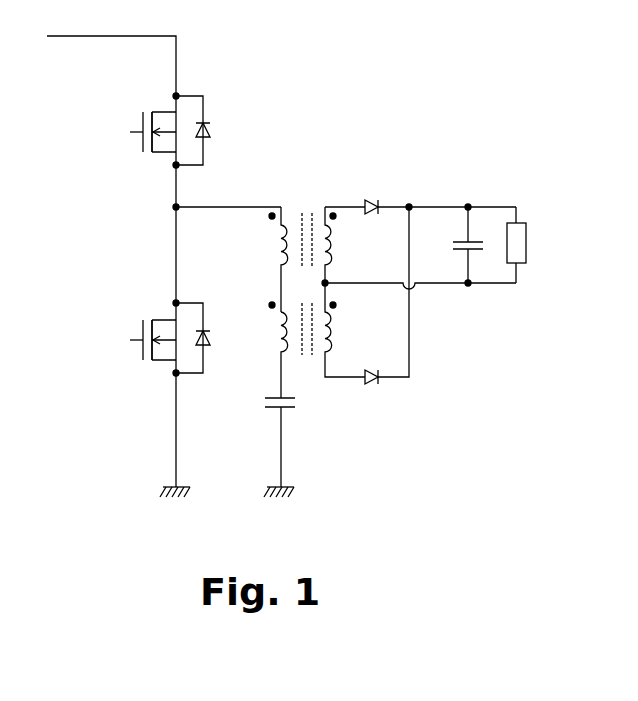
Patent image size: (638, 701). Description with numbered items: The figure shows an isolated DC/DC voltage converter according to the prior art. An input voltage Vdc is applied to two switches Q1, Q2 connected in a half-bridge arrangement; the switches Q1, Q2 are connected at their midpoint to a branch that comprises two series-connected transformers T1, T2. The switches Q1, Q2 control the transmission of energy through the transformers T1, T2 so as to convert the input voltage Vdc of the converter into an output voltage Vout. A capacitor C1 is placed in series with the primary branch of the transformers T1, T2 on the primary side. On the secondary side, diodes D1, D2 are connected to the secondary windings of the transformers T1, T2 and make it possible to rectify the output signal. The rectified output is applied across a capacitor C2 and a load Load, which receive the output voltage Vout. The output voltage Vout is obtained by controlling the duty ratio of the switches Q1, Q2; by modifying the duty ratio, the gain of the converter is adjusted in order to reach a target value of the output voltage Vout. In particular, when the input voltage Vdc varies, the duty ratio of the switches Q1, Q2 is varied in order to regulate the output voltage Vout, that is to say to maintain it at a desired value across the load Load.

The input voltage Vdc is at (111, 55).
The switch Q1 is at (151, 130).
The switch Q2 is at (142, 338).
The transformer T1 is at (302, 246).
The transformer T2 is at (317, 340).
The diode D1 is at (420, 194).
The diode D2 is at (384, 309).
The capacitor C1 is at (264, 439).
The capacitor C2 is at (453, 245).
The output voltage Vout is at (503, 193).
The load Load is at (541, 245).